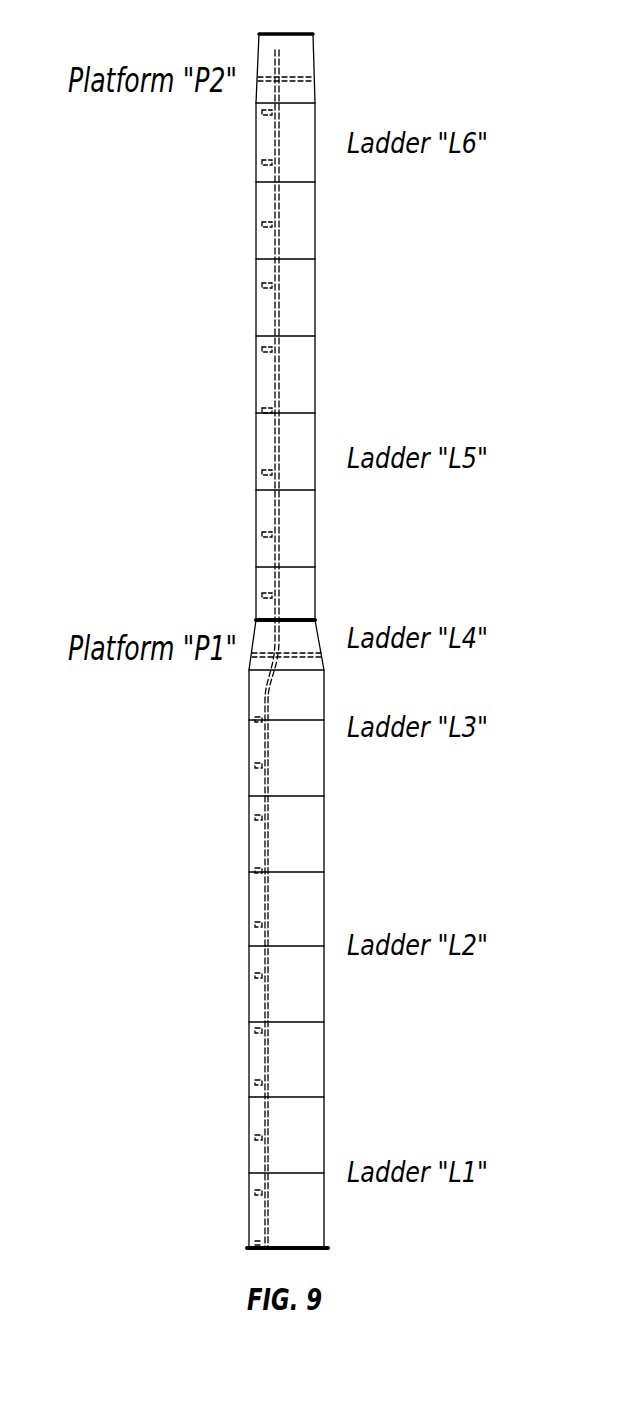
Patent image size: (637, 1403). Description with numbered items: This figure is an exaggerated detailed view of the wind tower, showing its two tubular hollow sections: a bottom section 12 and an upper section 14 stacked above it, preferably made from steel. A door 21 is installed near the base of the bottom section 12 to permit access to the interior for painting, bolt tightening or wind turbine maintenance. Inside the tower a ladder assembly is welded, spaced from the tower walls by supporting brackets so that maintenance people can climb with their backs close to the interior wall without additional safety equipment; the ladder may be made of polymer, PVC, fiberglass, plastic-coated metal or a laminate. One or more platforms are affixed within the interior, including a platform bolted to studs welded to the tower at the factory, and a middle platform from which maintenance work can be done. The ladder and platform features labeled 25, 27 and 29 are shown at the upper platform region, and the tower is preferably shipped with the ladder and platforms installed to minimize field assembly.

The bottom section 12 is at (249, 908).
The upper section 14 is at (256, 376).
The door 21 is at (328, 1218).
The platform 25 is at (313, 78).
The ladder 27 is at (281, 72).
The top flange 29 is at (280, 33).